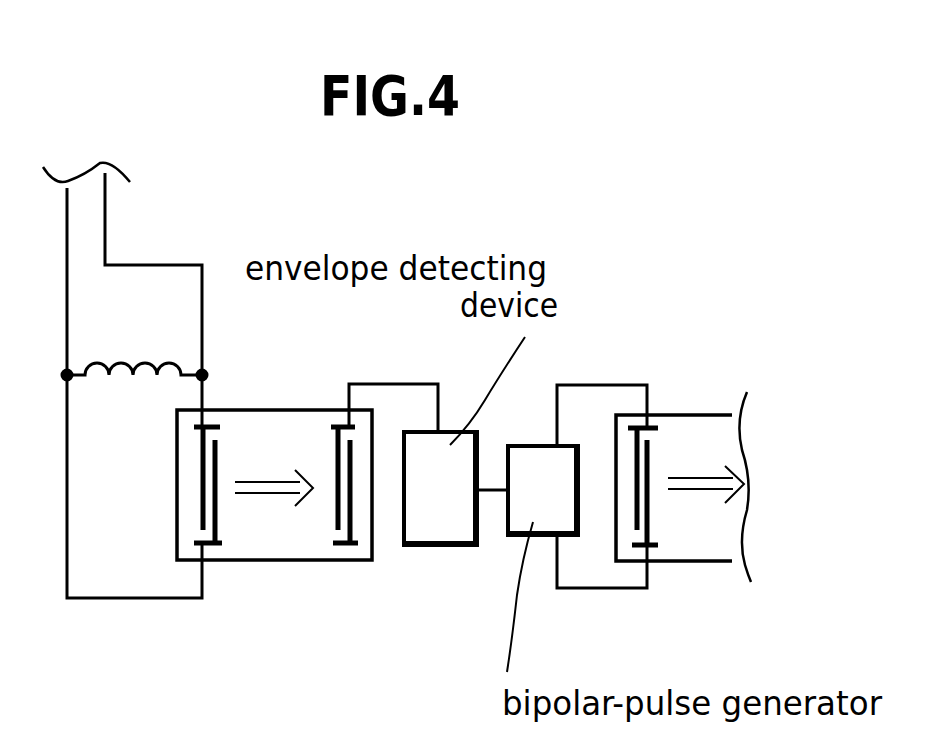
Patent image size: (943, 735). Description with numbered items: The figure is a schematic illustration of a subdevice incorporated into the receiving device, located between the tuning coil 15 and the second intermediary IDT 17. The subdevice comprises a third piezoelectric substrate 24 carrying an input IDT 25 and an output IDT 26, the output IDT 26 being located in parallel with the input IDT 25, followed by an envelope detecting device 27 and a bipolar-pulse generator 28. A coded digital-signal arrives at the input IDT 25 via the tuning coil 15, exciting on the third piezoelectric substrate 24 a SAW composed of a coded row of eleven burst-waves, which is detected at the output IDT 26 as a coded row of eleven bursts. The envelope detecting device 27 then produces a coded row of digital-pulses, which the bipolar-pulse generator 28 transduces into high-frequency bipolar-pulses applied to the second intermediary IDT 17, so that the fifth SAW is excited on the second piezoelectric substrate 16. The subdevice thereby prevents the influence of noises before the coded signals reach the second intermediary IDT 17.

The tuning coil 15 is at (134, 342).
The third piezoelectric substrate 24 is at (280, 420).
The input IDT 25 is at (220, 518).
The output IDT 26 is at (352, 518).
The envelope detecting device 27 is at (440, 488).
The bipolar-pulse generator 28 is at (543, 490).
The second piezoelectric substrate 16 is at (680, 435).
The second intermediary IDT 17 is at (650, 517).